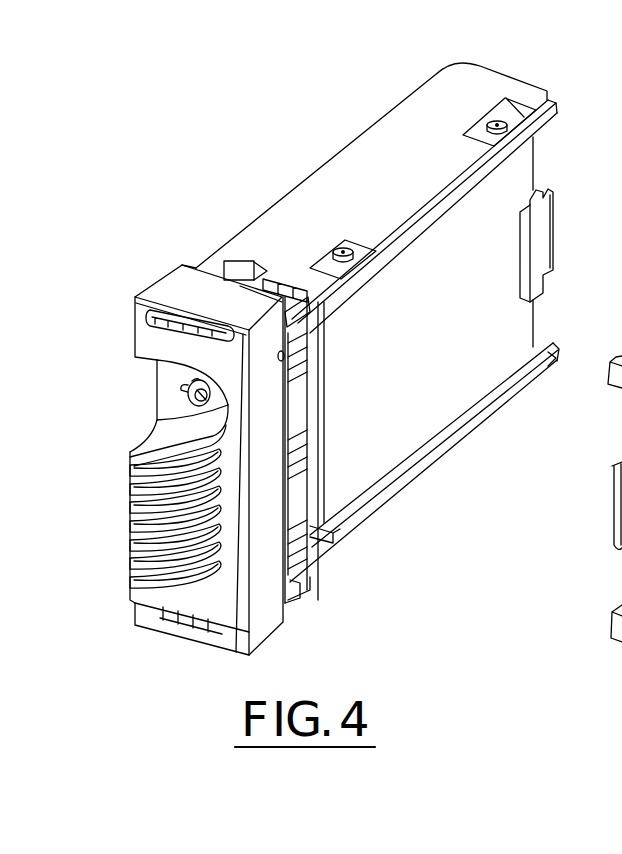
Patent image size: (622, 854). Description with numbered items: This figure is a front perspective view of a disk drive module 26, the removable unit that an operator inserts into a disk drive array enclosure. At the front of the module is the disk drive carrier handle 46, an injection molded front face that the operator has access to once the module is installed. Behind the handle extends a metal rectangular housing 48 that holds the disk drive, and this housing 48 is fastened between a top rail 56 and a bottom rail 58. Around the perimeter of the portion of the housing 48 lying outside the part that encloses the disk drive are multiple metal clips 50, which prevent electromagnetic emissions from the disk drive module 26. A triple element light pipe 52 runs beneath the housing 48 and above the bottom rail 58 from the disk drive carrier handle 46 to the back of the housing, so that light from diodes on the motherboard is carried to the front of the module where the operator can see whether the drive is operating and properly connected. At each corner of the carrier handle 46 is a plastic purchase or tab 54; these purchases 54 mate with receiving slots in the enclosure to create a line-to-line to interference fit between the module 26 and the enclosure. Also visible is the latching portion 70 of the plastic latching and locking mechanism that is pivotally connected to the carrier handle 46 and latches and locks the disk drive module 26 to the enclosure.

The disk drive module 26 is at (328, 98).
The disk drive carrier handle 46 is at (280, 620).
The housing 48 is at (432, 420).
The metal clips 50 is at (300, 290).
The triple element light pipe 52 is at (167, 608).
The purchase or tab 54 is at (183, 267).
The top rail 56 is at (480, 155).
The bottom rail 58 is at (549, 372).
The latching portion 70 is at (240, 261).